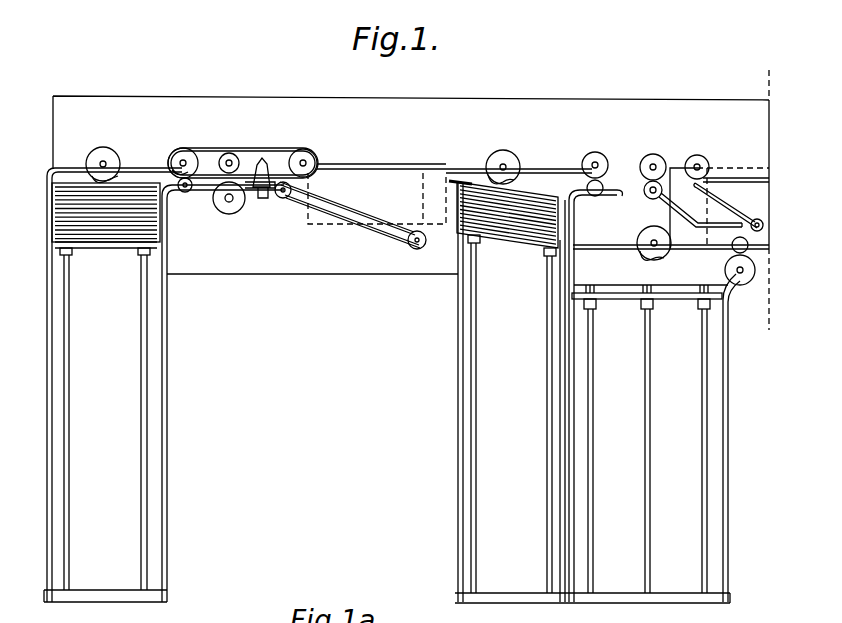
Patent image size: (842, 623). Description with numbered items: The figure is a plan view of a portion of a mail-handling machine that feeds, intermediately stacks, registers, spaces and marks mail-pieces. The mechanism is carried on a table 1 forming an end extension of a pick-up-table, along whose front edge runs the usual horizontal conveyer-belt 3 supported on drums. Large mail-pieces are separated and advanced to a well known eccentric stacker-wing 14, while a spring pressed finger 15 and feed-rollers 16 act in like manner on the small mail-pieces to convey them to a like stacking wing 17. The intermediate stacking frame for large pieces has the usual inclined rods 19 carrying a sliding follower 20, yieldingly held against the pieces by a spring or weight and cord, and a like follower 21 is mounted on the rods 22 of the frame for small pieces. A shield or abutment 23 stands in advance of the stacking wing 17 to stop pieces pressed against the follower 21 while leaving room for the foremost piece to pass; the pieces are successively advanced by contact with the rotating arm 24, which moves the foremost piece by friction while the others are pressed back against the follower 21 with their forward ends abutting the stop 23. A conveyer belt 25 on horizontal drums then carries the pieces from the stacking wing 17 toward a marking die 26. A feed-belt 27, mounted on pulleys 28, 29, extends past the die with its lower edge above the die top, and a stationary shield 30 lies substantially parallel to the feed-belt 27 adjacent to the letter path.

The table 1 is at (523, 98).
The horizontal conveyer-belt 3 is at (758, 196).
The eccentric stacker-wing 14 is at (638, 237).
The finger 15 is at (720, 200).
The feed-rollers 16 is at (690, 156).
The stacking wing 17 is at (510, 147).
The inclined rods 19 is at (702, 480).
The sliding follower 20 is at (628, 308).
The follower 21 is at (525, 245).
The rods 22 is at (548, 425).
The shield or abutment 23 is at (457, 287).
The arm 24 is at (470, 182).
The conveyer belt 25 is at (433, 206).
The marking die 26 is at (226, 213).
The feed-belt 27 is at (229, 148).
The pulley 28 is at (306, 150).
The pulley 29 is at (183, 150).
The stationary shield 30 is at (268, 192).